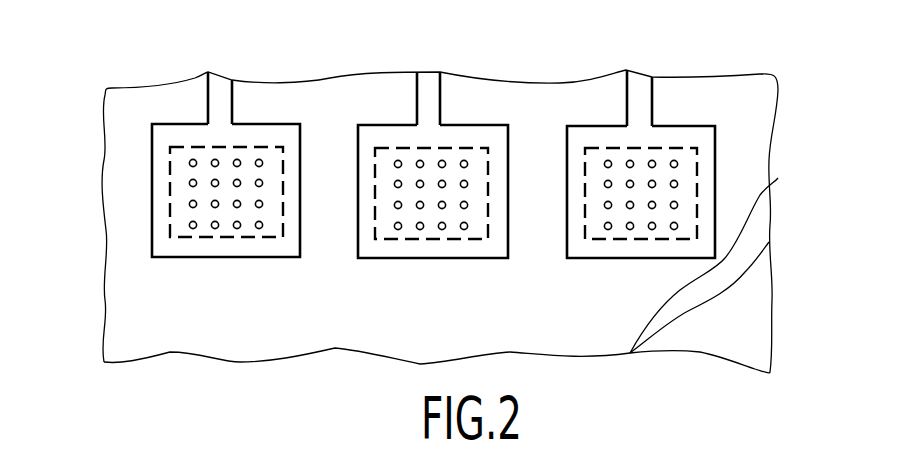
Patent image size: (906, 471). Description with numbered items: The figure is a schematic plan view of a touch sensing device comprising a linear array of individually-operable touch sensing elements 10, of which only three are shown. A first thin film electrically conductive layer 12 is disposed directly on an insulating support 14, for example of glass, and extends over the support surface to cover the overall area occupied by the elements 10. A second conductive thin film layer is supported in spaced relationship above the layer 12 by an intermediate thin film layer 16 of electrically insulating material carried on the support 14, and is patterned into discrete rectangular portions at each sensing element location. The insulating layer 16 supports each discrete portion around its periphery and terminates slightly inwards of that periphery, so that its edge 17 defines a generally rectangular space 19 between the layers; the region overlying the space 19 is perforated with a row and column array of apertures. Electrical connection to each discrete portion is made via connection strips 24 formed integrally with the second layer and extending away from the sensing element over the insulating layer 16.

The touch sensing element 10 is at (152, 261).
The first thin film electrically conductive layer 12 is at (758, 221).
The insulating support 14 is at (750, 310).
The intermediate thin film layer of electrically insulating material 16 is at (745, 173).
The edge 17 is at (170, 193).
The rectangular space 19 is at (182, 215).
The connection strip 24 is at (232, 98).